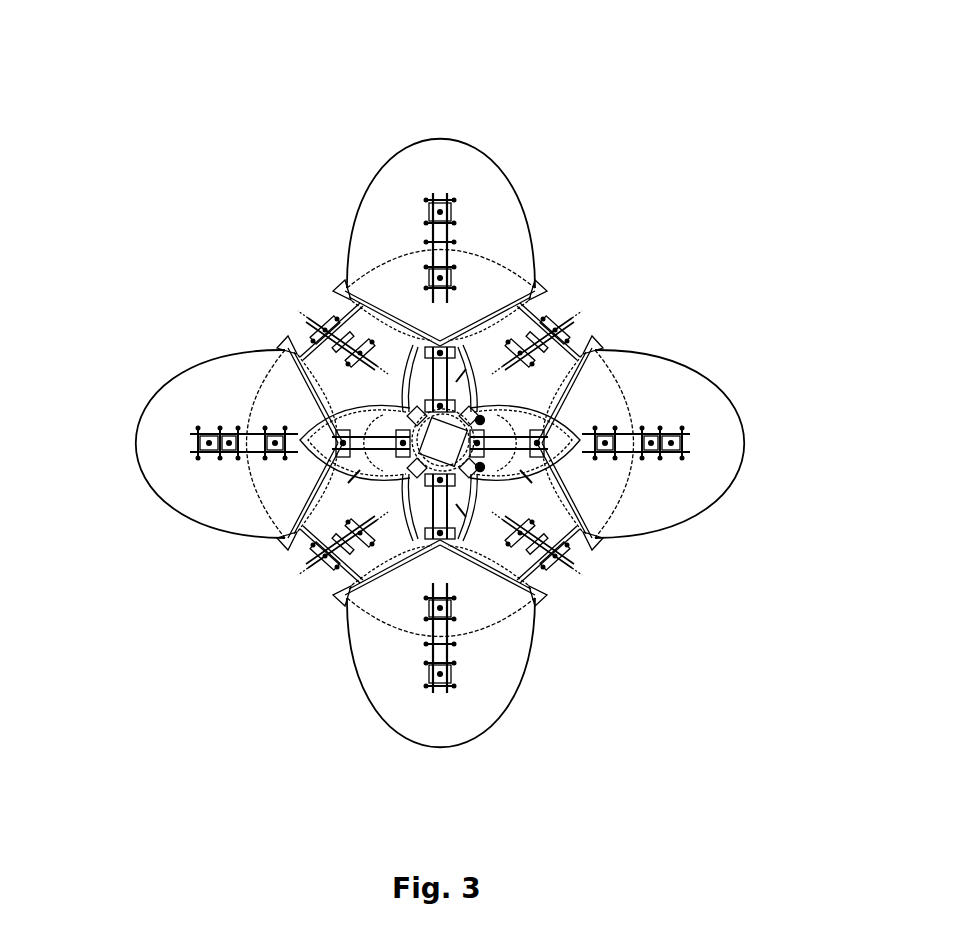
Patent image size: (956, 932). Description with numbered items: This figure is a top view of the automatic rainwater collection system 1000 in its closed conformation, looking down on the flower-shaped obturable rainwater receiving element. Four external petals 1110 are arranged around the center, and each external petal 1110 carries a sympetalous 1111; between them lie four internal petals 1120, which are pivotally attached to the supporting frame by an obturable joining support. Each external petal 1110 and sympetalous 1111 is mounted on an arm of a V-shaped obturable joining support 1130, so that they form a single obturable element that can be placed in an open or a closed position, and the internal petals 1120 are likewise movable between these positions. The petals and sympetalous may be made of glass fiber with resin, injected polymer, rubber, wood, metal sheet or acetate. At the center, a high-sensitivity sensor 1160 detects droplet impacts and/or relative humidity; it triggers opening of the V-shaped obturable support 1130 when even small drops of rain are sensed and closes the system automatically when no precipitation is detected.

The automatic rainwater collection system 1000 is at (447, 383).
The external petal 1110 is at (590, 412).
The sympetalous 1111 is at (685, 396).
The internal petal 1120 is at (547, 518).
The V-shaped obturable joining support 1130 is at (690, 440).
The sensor 1160 is at (458, 448).